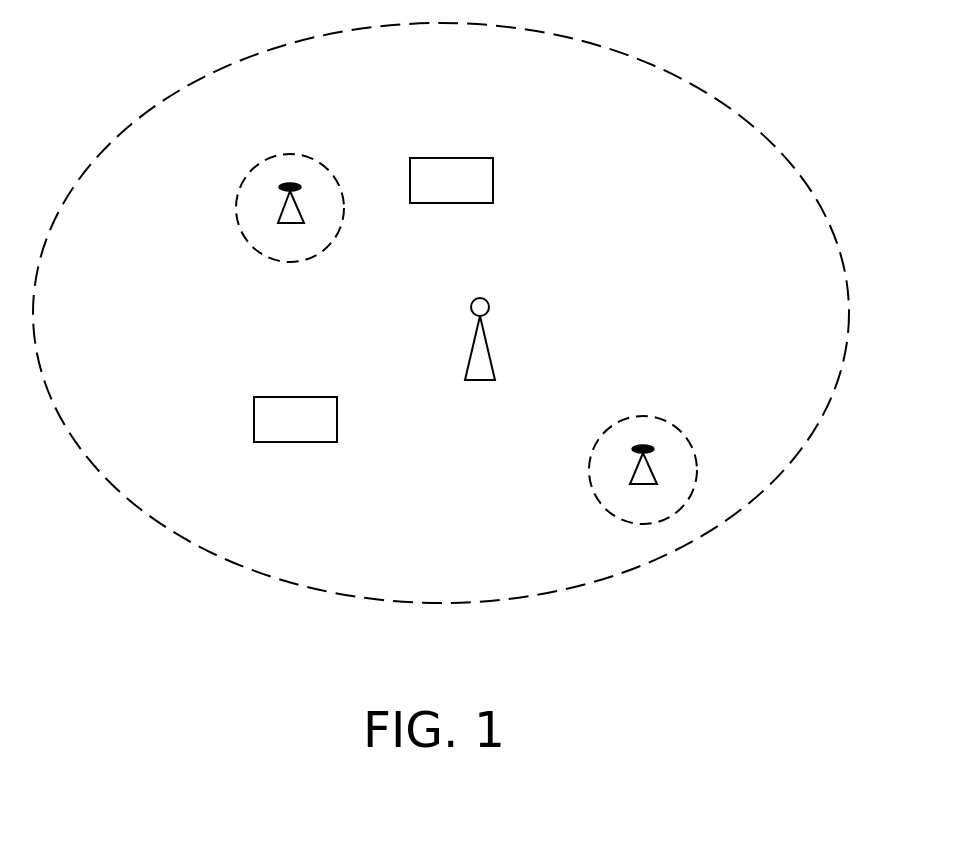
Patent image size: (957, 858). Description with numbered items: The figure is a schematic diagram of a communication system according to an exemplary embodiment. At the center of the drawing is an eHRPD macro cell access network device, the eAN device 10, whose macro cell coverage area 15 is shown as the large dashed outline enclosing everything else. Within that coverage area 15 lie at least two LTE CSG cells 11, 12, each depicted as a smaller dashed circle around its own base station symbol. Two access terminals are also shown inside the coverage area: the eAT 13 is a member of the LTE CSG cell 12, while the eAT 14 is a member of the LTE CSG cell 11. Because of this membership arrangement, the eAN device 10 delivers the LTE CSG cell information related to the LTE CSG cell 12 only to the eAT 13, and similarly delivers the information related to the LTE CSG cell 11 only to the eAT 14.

The eHRPD macro cell access network device (eAN device) 10 is at (490, 345).
The LTE CSG cell 11 is at (290, 156).
The LTE CSG cell 12 is at (655, 418).
The eAT 13 is at (320, 397).
The eAT 14 is at (478, 158).
The macro cell coverage area 15 is at (827, 212).